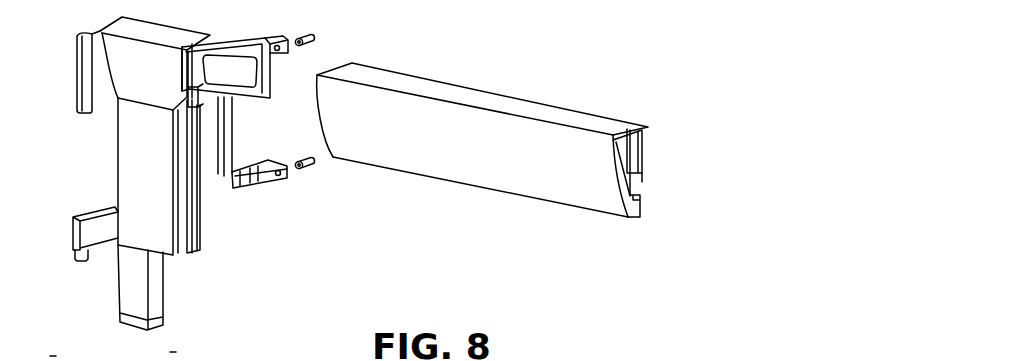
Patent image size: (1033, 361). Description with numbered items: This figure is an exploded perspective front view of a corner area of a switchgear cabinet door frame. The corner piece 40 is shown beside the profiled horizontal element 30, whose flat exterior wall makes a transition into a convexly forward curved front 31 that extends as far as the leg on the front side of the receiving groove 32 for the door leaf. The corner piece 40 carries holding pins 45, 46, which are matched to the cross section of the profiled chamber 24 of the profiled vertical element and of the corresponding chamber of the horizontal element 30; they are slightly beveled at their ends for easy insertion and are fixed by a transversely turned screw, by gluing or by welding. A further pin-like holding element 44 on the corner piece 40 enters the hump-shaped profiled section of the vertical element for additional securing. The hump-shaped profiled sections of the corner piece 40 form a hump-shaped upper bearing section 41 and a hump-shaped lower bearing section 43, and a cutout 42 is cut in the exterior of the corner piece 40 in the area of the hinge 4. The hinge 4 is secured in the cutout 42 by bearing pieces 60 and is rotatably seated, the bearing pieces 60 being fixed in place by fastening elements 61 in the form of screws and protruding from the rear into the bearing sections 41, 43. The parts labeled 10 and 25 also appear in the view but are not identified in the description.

The hinge 4 is at (235, 127).
The slot 10 is at (637, 182).
The profiled chamber 24 is at (177, 353).
The element 25 is at (57, 355).
The profiled horizontal element 30 is at (560, 98).
The convexly forward curved front 31 is at (552, 185).
The receiving groove 32 is at (635, 218).
The corner piece 40 is at (243, 235).
The hump-shaped upper bearing section 41 is at (73, 97).
The cutout 42 is at (98, 163).
The hump-shaped lower bearing section 43 is at (72, 237).
The pin-like holding element 44 is at (83, 263).
The holding pin 45 is at (167, 297).
The holding pin 46 is at (288, 66).
The bearing piece 60 is at (270, 188).
The fastening element 61 is at (310, 165).